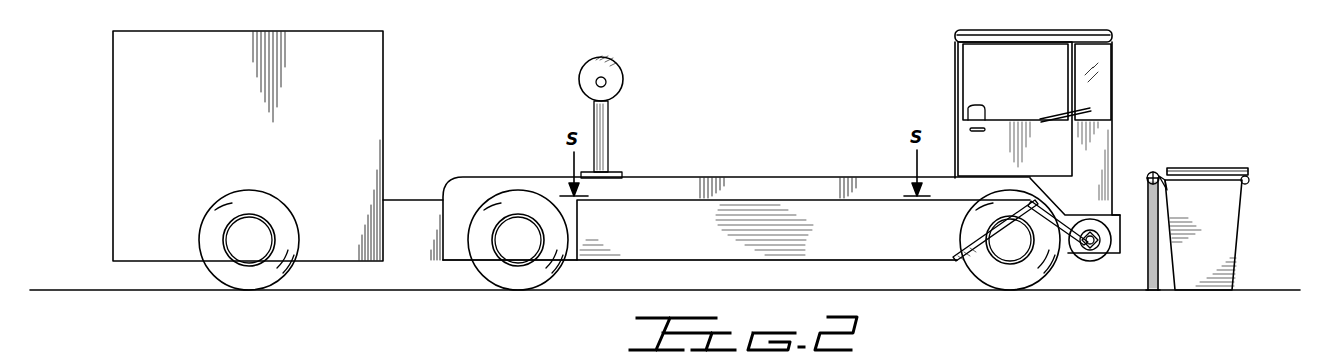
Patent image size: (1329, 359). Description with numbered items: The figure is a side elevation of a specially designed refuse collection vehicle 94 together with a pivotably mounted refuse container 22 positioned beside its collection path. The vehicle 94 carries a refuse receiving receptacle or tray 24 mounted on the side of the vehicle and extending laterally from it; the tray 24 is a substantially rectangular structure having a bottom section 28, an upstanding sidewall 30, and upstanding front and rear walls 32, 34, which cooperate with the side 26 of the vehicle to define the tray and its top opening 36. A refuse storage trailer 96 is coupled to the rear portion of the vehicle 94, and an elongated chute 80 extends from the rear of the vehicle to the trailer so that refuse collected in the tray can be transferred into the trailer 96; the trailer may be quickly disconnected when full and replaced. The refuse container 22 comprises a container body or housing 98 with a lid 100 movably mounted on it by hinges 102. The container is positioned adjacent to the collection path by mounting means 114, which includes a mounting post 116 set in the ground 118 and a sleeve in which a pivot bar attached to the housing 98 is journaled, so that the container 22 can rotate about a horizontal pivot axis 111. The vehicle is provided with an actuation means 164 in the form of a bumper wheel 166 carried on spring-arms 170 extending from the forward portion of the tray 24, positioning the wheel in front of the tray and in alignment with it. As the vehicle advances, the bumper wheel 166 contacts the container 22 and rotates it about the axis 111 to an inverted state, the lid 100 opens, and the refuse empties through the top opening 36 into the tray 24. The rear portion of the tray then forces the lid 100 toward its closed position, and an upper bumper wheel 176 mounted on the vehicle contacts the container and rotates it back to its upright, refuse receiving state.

The refuse container 22 is at (1229, 212).
The refuse receiving receptacle or tray 24 is at (742, 200).
The side of the refuse collection vehicle 26 is at (645, 186).
The bottom section 28 is at (778, 266).
The upstanding sidewall 30 is at (850, 253).
The upstanding front wall 32 is at (955, 232).
The upstanding rear wall 34 is at (572, 262).
The top opening 36 is at (808, 198).
The chute 80 is at (412, 200).
The refuse collection vehicle 94 is at (1116, 142).
The refuse storage trailer 96 is at (383, 72).
The container body or housing 98 is at (1242, 235).
The lid 100 is at (1205, 168).
The hinges 102 is at (1250, 175).
The pivot axis 111 is at (1152, 172).
The mounting means 114 is at (1152, 292).
The mounting post 116 is at (1148, 266).
The ground 118 is at (1250, 290).
The actuation means 164 is at (1075, 258).
The bumper wheel 166 is at (1090, 218).
The spring-arms 170 is at (975, 195).
The upper bumper wheel 176 is at (623, 80).